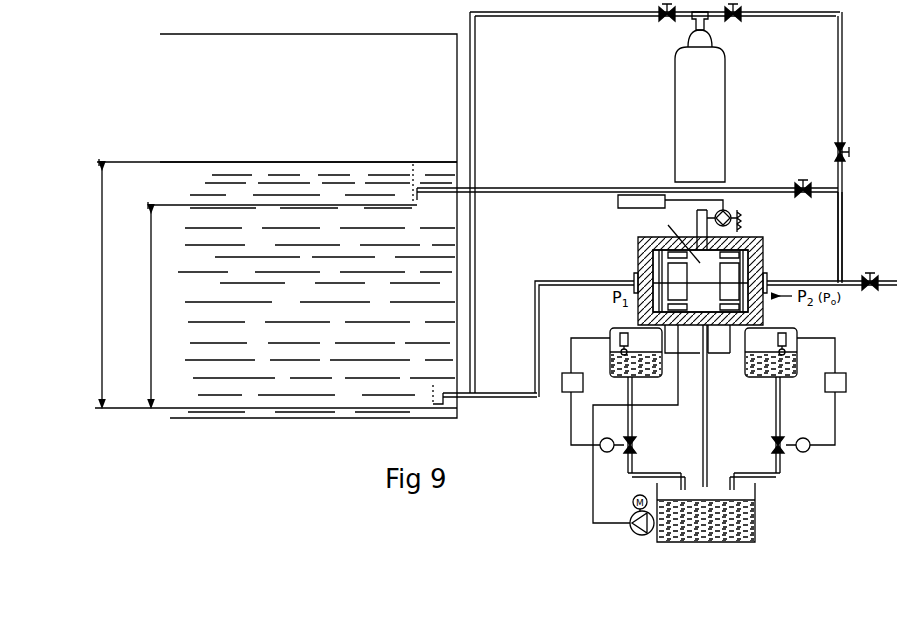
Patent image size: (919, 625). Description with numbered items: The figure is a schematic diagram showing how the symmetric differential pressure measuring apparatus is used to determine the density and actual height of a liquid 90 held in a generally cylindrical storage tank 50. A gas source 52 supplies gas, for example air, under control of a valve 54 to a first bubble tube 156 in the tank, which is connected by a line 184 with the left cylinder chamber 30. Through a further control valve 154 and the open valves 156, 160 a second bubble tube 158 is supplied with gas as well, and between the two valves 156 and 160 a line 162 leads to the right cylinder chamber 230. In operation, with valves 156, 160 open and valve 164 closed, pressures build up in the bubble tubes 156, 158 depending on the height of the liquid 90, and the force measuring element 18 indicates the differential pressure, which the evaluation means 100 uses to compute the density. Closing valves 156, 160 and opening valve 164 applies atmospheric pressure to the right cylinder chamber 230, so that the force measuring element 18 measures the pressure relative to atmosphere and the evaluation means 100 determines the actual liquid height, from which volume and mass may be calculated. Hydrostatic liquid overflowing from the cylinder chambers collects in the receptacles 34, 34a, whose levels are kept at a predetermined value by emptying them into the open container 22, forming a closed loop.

The force measuring element 18 is at (733, 216).
The container 22 is at (755, 508).
The left cylinder chamber 30 is at (655, 255).
The receptacle 34 is at (640, 374).
The receptacle 34a is at (758, 370).
The storage tank 50 is at (459, 419).
The gas source 52 is at (712, 123).
The valve 54 is at (664, 18).
The liquid 90 is at (327, 161).
The evaluation means 100 is at (618, 195).
The control valve 154 is at (737, 20).
The first bubble tube 156 is at (838, 148).
The second bubble tube 158 is at (536, 190).
The valve 160 is at (797, 186).
The line 162 is at (838, 237).
The valve 164 is at (876, 290).
The line 184 is at (553, 278).
The right cylinder chamber 230 is at (749, 248).